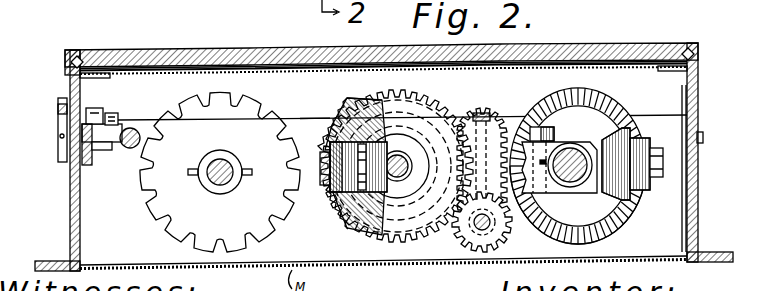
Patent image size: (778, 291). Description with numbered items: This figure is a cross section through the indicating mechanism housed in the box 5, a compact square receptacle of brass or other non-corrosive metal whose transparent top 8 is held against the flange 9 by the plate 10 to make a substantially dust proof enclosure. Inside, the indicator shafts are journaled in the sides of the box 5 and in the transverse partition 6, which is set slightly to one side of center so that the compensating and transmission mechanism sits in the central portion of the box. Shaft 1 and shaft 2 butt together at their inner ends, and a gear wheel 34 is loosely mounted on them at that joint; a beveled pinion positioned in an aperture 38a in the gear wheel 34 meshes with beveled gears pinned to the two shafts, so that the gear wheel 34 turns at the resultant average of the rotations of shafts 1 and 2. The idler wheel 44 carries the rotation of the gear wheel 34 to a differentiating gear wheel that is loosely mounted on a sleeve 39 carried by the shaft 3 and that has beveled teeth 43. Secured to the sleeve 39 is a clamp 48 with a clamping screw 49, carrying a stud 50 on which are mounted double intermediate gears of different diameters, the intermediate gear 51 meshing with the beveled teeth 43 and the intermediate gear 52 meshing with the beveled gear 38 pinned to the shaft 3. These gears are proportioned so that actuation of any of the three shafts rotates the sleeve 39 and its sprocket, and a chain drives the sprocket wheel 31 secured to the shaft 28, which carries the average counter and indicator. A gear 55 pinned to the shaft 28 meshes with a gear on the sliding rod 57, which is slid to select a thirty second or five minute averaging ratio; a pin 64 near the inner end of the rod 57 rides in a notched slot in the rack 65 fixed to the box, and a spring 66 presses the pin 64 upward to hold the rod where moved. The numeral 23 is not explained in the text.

The shaft 1 is at (409, 172).
The shaft 2 is at (410, 150).
The shaft 3 is at (572, 146).
The box 5 is at (70, 199).
The transverse partition 6 is at (311, 132).
The transparent top 8 is at (166, 52).
The flange 9 is at (87, 52).
The plate 10 is at (254, 50).
The toothed slide 23 is at (443, 143).
The shaft 28 is at (224, 188).
The sprocket wheel 31 is at (270, 117).
The gear wheel 34 is at (345, 110).
The beveled gear 38 is at (334, 190).
The aperture 38a is at (324, 178).
The sleeve 39 is at (572, 185).
The beveled teeth 43 is at (632, 222).
The idler wheel 44 is at (478, 236).
The clamp 48 is at (553, 142).
The clamping screw 49 is at (524, 128).
The stud 50 is at (665, 161).
The intermediate gear 51 is at (643, 145).
The intermediate gear 52 is at (613, 133).
The gear 55 is at (330, 152).
The sliding rod 57 is at (134, 130).
The pin 64 is at (100, 152).
The rack 65 is at (87, 167).
The spring 66 is at (122, 148).